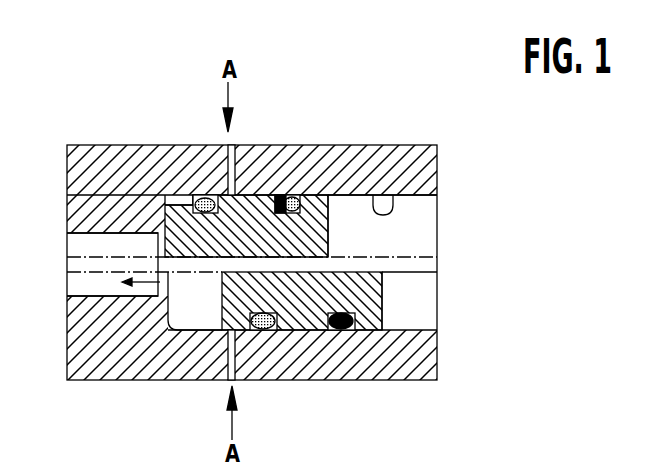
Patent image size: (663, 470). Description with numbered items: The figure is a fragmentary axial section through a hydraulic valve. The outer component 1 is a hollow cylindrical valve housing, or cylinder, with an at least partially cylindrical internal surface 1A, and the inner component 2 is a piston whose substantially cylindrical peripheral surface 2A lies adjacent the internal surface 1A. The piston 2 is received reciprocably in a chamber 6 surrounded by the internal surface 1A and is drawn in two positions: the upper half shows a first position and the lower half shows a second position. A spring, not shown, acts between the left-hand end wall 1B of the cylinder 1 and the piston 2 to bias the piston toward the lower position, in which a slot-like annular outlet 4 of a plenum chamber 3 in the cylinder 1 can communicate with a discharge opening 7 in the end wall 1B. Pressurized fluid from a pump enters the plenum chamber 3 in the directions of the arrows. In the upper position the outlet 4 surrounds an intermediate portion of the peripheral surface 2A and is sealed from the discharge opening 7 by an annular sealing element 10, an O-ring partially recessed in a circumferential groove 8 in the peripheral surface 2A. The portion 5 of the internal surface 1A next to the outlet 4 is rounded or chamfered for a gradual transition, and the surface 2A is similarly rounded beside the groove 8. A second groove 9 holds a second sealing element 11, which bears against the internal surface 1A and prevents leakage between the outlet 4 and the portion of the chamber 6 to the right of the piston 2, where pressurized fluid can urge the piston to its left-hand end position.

The outer component 1 is at (368, 167).
The internal surface 1A is at (388, 194).
The left-hand end wall 1B is at (68, 342).
The inner component 2 is at (310, 230).
The external or peripheral surface 2A is at (368, 332).
The plenum chamber 3 is at (243, 147).
The slot-like annular outlet 4 is at (209, 198).
The rounded portion of the internal surface 5 is at (230, 320).
The chamber 6 is at (185, 295).
The discharge opening 7 is at (92, 283).
The circumferentially extending groove 8 is at (200, 198).
The second circumferentially complete groove 9 is at (281, 196).
The annular sealing element 10 is at (178, 199).
The second ring-shaped sealing element 11 is at (297, 196).